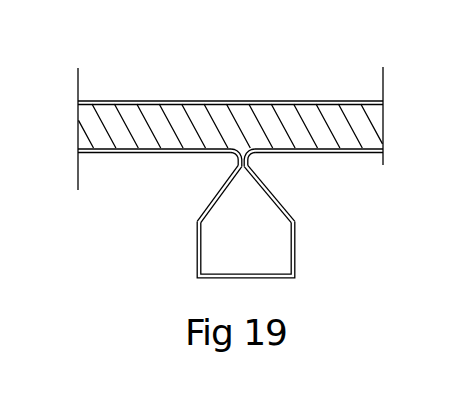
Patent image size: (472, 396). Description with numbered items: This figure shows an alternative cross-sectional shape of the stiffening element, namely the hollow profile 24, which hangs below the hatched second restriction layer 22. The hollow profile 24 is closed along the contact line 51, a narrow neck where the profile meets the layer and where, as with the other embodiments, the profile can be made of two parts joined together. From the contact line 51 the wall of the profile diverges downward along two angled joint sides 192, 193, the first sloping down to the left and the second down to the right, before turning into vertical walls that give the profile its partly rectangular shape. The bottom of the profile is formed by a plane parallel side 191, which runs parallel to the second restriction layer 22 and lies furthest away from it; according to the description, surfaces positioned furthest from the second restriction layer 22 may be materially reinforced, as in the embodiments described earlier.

The second restriction layer 22 is at (162, 152).
The hollow profile 24 is at (253, 175).
The contact line 51 is at (244, 162).
The plane parallel side 191 is at (268, 278).
The angled joint side 192 is at (226, 189).
The angled joint side 193 is at (278, 204).